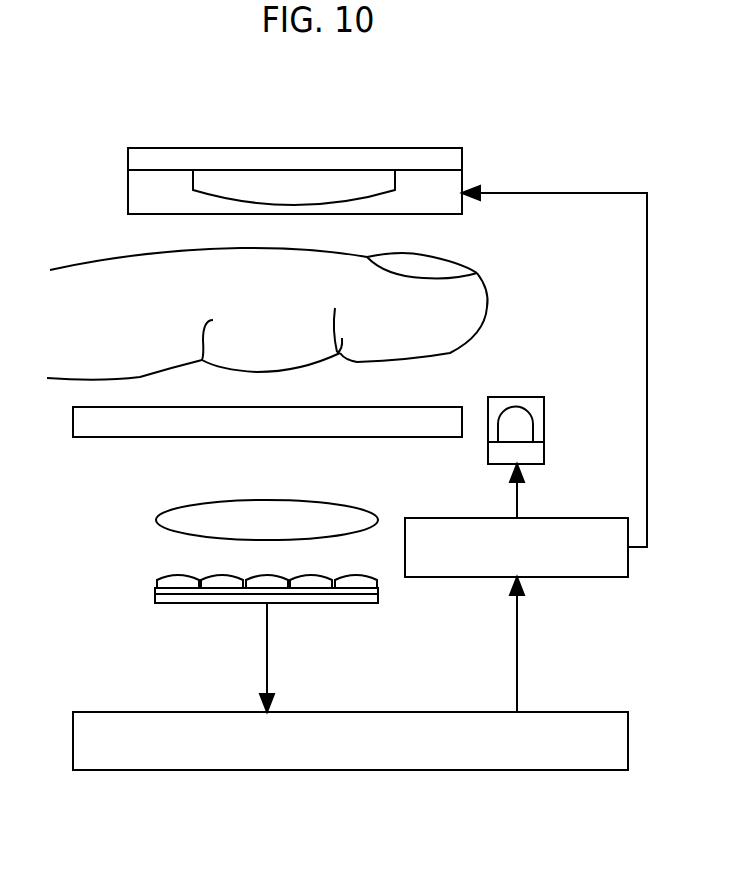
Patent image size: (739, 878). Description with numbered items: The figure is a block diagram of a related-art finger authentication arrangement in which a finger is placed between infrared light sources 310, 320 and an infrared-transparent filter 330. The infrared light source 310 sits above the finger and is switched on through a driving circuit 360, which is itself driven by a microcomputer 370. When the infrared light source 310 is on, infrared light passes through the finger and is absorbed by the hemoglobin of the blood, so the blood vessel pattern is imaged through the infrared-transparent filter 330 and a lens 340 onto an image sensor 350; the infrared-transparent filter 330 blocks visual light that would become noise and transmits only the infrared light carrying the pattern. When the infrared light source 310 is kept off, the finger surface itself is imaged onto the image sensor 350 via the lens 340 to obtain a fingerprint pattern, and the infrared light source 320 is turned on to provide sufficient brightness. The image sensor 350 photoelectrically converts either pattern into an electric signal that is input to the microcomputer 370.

The infrared light source 310 is at (463, 148).
The infrared light source 320 is at (540, 397).
The infrared-transparent filter 330 is at (127, 437).
The lens 340 is at (155, 518).
The image sensor 350 is at (155, 601).
The driving circuit 360 is at (516, 547).
The microcomputer 370 is at (350, 741).